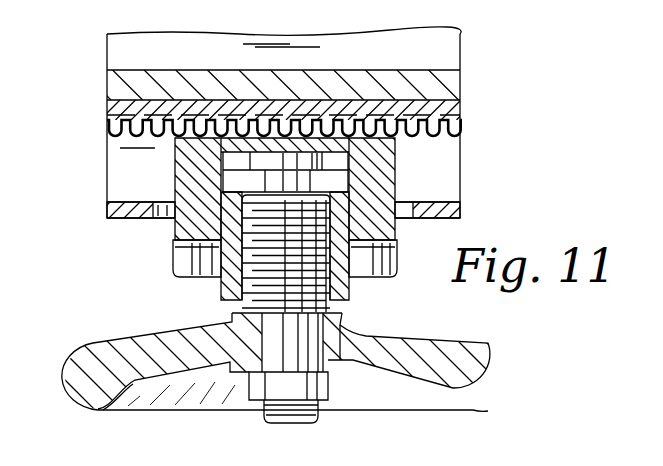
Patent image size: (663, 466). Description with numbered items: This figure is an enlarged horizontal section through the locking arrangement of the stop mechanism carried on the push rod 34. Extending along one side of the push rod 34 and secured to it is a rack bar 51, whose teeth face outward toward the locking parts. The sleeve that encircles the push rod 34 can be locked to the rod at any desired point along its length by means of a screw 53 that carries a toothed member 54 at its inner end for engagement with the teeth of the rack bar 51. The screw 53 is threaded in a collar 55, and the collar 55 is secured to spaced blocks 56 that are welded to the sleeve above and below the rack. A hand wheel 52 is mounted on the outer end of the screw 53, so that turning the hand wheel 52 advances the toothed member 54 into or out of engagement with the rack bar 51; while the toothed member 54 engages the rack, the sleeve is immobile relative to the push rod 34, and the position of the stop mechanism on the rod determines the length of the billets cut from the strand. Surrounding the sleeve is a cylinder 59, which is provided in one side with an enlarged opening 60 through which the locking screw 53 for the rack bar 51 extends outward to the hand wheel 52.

The push rod 34 is at (113, 85).
The rack bar 51 is at (463, 111).
The hand wheel 52 is at (72, 370).
The screw 53 is at (250, 303).
The toothed member 54 is at (377, 163).
The collar 55 is at (340, 292).
The spaced blocks 56 is at (183, 152).
The cylinder 59 is at (113, 210).
The enlarged opening 60 is at (405, 210).